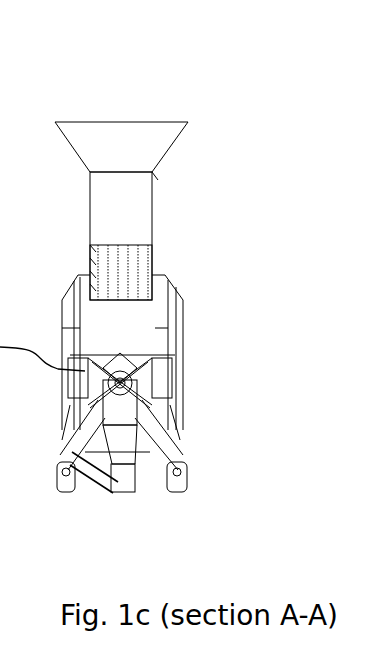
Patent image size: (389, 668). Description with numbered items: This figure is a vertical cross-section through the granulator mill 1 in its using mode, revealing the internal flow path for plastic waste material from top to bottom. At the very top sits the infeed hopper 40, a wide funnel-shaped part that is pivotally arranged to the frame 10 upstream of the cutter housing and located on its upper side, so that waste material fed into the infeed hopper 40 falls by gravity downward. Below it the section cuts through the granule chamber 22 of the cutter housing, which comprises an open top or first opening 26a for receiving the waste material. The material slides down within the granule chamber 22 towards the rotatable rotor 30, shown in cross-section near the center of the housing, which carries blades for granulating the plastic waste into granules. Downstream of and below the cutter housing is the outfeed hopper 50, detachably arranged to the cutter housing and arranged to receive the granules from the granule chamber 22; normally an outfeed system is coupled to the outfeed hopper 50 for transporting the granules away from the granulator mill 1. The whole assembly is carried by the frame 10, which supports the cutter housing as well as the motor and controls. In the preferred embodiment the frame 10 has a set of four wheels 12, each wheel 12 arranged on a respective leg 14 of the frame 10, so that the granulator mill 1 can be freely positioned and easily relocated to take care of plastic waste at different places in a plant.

The granulator mill 1 is at (178, 94).
The infeed hopper 40 is at (145, 200).
The frame 10 is at (165, 408).
The granule chamber 22 is at (138, 357).
The rotor 30 is at (127, 383).
The first opening 26a is at (100, 350).
The leg 14 is at (172, 435).
The wheel 12 is at (178, 487).
The outfeed hopper 50 is at (127, 477).